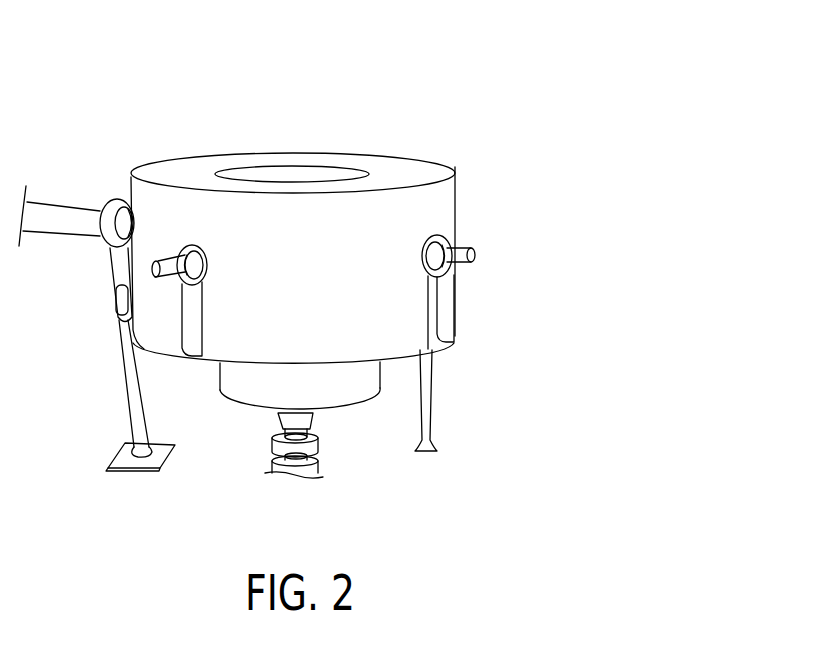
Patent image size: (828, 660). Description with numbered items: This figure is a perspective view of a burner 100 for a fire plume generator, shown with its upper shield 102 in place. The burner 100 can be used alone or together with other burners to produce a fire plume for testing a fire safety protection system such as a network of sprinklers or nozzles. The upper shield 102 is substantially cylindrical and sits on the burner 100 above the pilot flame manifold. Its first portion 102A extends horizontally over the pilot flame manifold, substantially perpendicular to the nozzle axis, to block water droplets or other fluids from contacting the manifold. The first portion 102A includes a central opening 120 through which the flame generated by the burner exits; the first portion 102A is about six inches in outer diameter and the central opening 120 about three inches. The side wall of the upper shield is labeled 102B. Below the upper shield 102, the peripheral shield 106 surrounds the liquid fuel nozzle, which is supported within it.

The burner 100 is at (463, 73).
The upper shield 102 is at (443, 203).
The first portion 102A is at (340, 160).
The side wall of drum 102B is at (325, 287).
The central opening 120 is at (263, 175).
The peripheral shield 106 is at (238, 390).